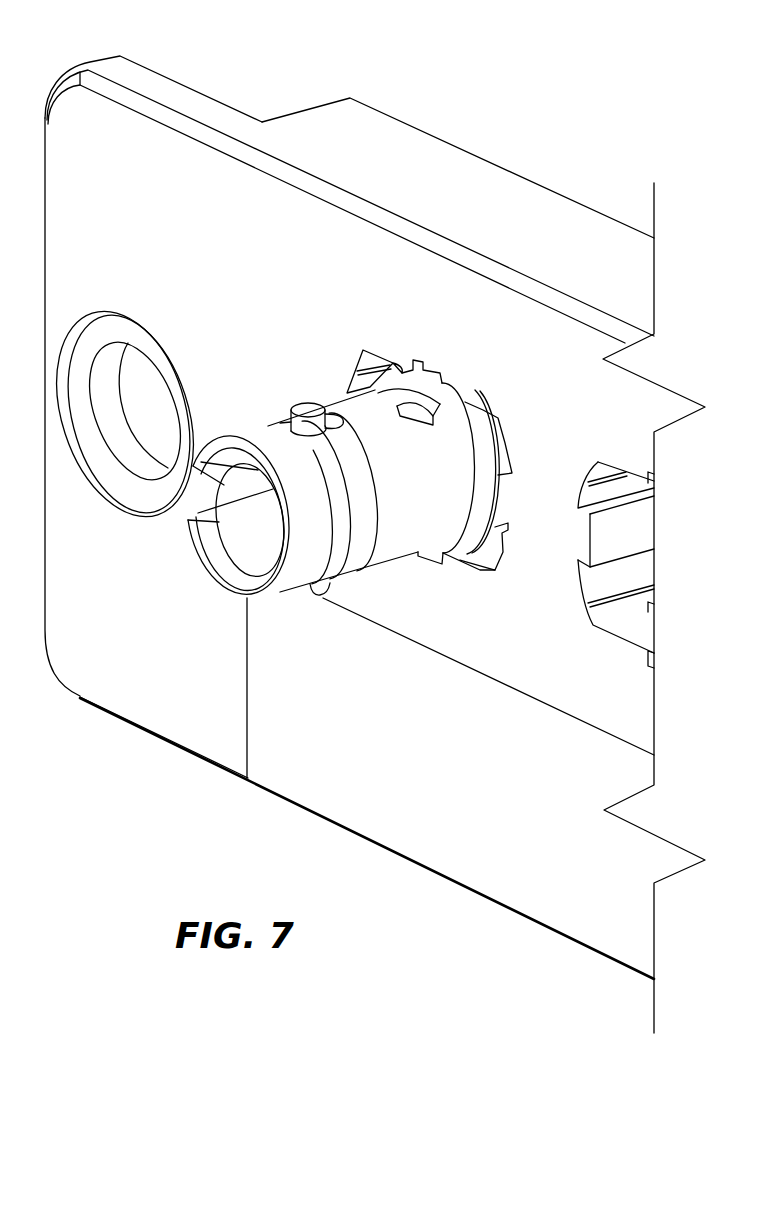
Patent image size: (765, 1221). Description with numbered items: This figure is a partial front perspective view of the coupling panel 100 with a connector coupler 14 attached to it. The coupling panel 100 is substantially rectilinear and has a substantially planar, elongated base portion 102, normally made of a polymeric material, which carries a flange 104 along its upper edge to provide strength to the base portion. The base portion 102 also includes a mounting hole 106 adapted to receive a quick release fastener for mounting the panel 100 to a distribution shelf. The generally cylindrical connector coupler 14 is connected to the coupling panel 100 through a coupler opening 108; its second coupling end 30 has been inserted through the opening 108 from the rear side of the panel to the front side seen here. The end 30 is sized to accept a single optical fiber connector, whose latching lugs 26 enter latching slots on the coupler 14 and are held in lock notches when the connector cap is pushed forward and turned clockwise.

The connector coupler 14 is at (366, 596).
The latching lug 26 is at (306, 404).
The second coupling end 30 is at (181, 533).
The coupling panel 100 is at (572, 154).
The base portion 102 is at (190, 100).
The flange 104 is at (415, 145).
The mounting hole 106 is at (115, 355).
The coupler opening 108 is at (465, 580).